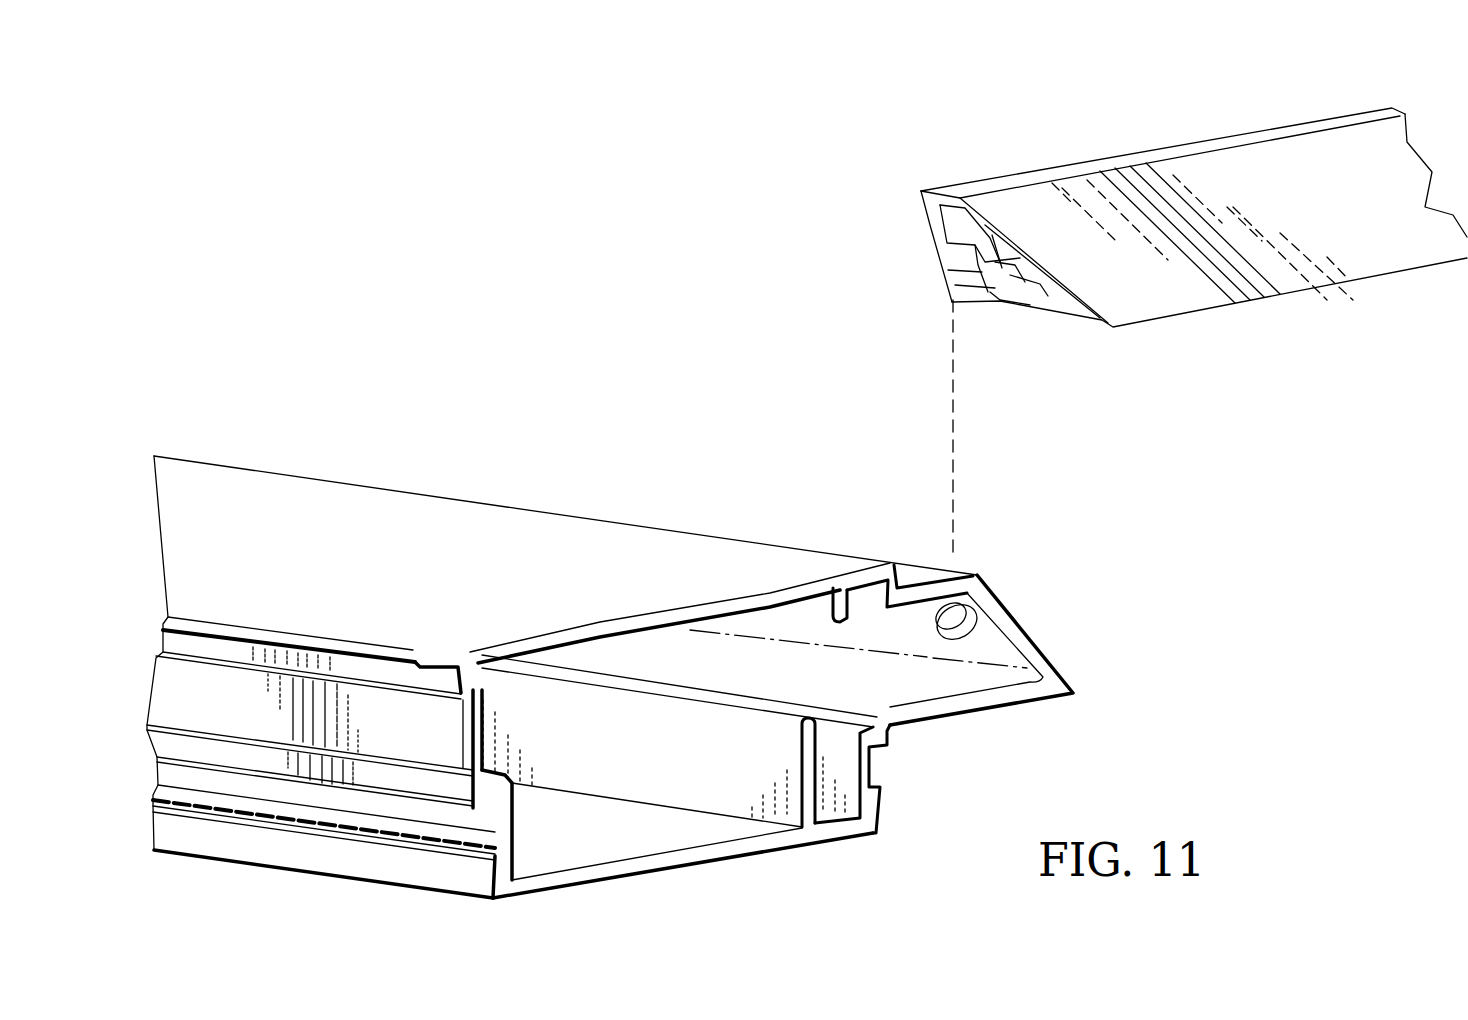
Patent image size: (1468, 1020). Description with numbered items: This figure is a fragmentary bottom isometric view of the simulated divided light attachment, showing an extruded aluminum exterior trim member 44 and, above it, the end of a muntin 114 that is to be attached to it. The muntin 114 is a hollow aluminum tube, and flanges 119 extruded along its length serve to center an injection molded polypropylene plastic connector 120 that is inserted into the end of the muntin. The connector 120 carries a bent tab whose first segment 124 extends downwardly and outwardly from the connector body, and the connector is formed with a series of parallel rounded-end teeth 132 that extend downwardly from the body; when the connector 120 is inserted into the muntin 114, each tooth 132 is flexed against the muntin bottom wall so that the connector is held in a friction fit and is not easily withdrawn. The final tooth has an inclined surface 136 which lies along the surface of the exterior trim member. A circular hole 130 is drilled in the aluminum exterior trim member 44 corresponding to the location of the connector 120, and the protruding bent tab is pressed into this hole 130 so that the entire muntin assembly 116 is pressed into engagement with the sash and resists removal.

The exterior trim member 44 is at (408, 490).
The muntin 114 is at (1250, 133).
The muntin assembly 116 is at (1350, 115).
The flange 119 is at (992, 246).
The connector 120 is at (935, 248).
The first segment 124 is at (993, 298).
The circular hole 130 is at (988, 612).
The tooth 132 is at (1040, 287).
The inclined surface 136 is at (1002, 276).